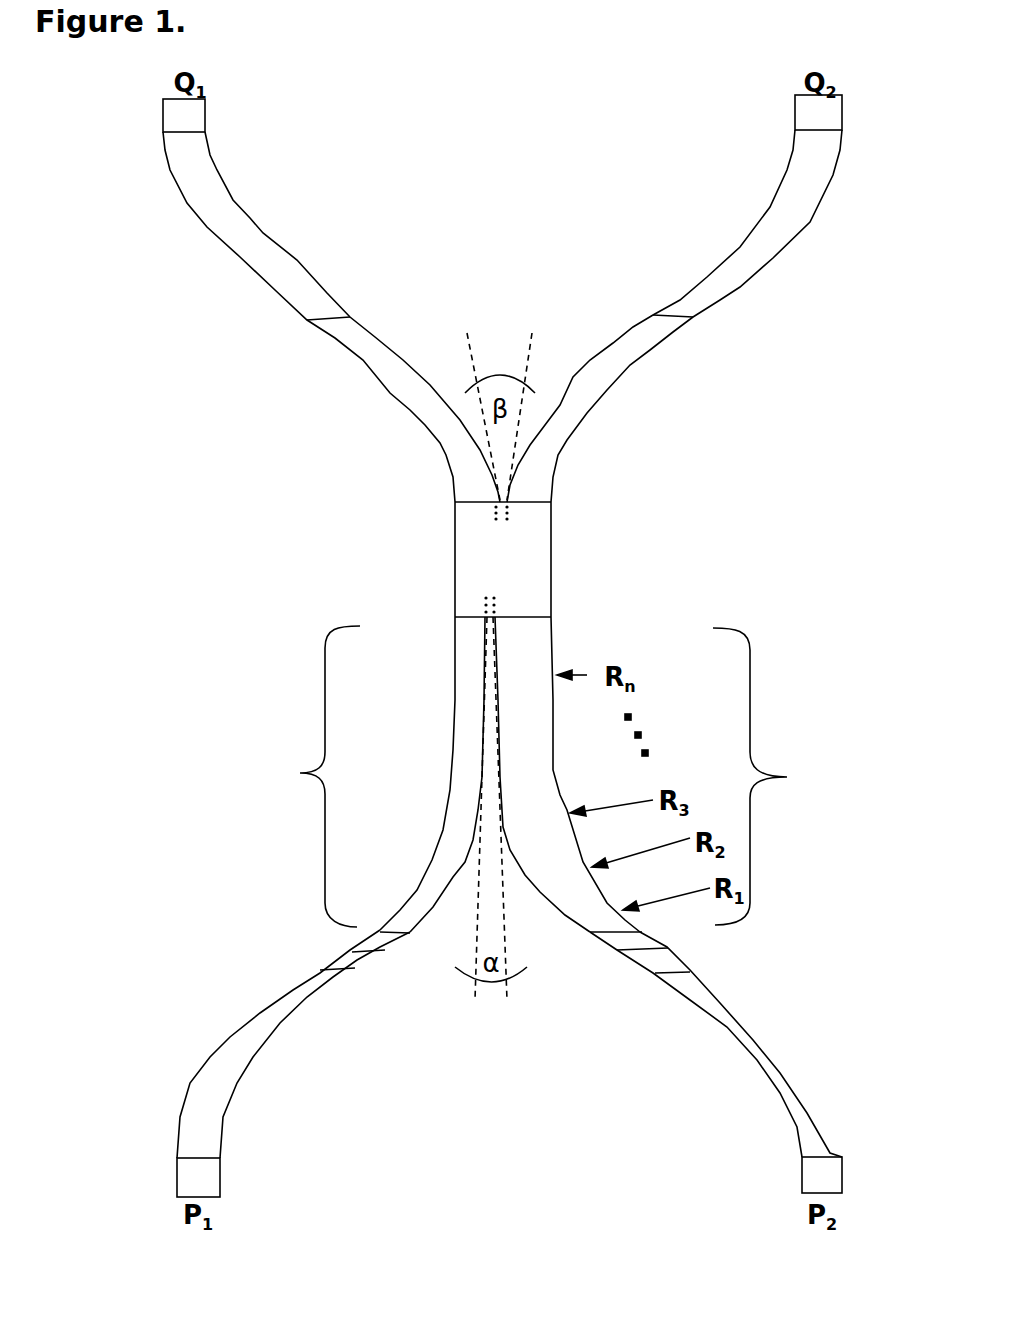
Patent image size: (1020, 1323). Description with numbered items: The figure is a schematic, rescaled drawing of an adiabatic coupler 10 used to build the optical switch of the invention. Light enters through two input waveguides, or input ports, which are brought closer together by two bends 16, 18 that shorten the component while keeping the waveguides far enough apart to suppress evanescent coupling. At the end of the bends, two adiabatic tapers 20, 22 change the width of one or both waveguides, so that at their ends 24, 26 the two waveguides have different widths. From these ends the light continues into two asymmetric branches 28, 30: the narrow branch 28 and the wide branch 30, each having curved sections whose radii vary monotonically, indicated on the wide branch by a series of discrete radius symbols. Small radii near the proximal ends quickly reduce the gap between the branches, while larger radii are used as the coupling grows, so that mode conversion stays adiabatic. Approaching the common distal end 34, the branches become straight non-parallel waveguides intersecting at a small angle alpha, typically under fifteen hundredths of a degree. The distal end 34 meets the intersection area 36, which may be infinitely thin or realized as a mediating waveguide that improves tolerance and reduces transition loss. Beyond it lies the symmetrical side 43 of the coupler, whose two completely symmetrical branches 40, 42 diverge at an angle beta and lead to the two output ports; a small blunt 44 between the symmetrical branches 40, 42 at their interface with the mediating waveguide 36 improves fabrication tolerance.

The adiabatic coupler 10 is at (651, 782).
The bend 16 is at (303, 956).
The bend 18 is at (698, 955).
The adiabatic taper 20 is at (342, 938).
The adiabatic taper 22 is at (673, 938).
The end 24 is at (364, 924).
The end 26 is at (658, 925).
The narrow branch 28 is at (360, 774).
The wide branch 30 is at (664, 774).
The distal end 34 is at (517, 603).
The intersection area 36 is at (431, 550).
The symmetrical branch 40 is at (393, 402).
The symmetrical branch 42 is at (604, 404).
The symmetrical side 43 is at (502, 310).
The blunt 44 is at (532, 515).